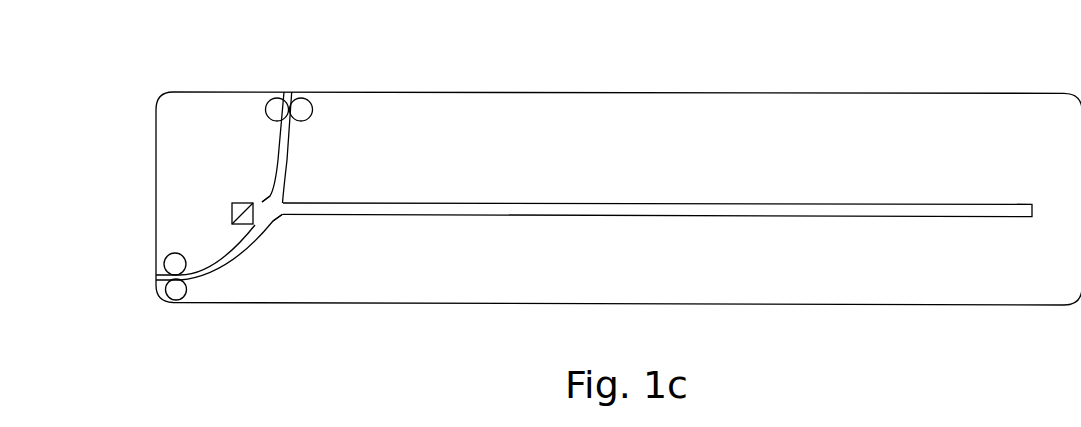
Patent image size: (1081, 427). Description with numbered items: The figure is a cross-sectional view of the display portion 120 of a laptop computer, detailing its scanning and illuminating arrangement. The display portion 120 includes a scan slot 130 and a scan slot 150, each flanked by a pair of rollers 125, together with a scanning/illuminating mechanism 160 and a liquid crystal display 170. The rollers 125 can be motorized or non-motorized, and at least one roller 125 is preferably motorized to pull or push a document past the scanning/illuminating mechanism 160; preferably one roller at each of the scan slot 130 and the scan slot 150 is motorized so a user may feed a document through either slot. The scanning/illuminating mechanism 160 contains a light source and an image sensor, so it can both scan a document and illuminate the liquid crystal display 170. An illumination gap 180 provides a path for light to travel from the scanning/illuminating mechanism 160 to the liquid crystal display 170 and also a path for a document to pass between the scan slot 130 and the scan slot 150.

The display portion 120 is at (793, 326).
The rollers 125 is at (272, 105).
The scan slot 130 is at (152, 278).
The scan slot 150 is at (288, 85).
The scanning/illuminating mechanism 160 is at (239, 199).
The liquid crystal display (LCD) 170 is at (437, 219).
The illumination gap 180 is at (274, 212).